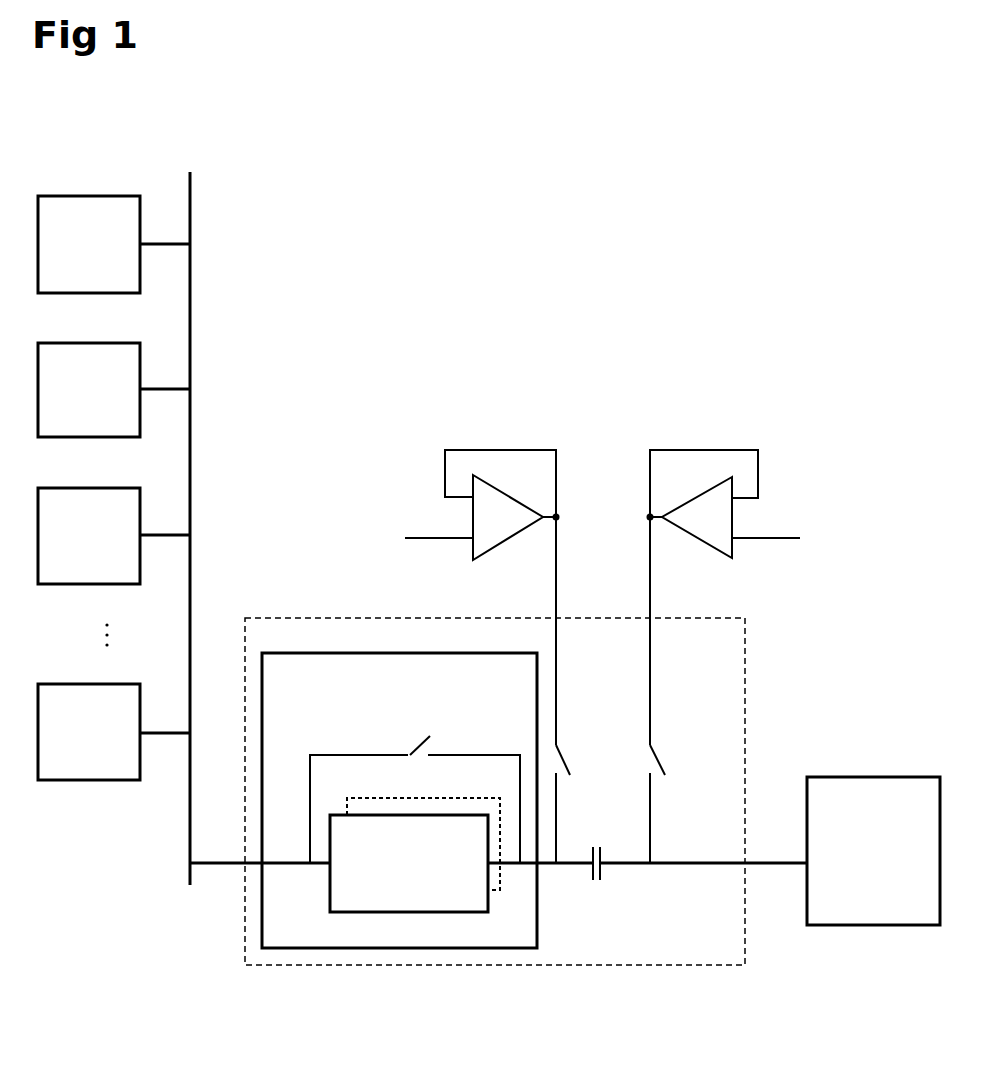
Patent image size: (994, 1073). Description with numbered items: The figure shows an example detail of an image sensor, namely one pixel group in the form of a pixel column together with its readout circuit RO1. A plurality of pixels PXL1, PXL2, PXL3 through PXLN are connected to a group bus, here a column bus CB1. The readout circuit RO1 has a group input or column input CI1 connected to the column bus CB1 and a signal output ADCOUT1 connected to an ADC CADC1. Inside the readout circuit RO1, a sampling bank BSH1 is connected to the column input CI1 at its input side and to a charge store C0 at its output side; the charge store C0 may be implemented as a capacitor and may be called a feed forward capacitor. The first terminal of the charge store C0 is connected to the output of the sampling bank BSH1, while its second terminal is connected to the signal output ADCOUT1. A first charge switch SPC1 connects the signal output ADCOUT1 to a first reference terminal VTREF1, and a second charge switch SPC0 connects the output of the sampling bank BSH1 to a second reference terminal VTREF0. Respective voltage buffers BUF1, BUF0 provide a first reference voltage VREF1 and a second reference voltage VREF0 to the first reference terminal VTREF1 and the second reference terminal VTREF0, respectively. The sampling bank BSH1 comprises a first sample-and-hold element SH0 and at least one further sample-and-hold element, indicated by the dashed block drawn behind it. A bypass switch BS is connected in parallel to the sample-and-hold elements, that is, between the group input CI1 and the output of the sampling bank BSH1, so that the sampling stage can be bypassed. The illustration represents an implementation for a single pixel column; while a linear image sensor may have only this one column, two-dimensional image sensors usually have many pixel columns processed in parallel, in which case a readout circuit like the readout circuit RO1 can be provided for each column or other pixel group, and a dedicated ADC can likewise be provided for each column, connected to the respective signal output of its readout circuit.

The column bus CB1 is at (191, 508).
The pixel PXL1 is at (114, 244).
The pixel PXL2 is at (114, 390).
The pixel PXL3 is at (114, 536).
The pixel PXLN is at (114, 732).
The column input CI1 is at (245, 864).
The readout circuit RO1 is at (495, 791).
The sampling bank BSH1 is at (399, 800).
The bypass switch BS is at (415, 781).
The first sample-and-hold element SH0 is at (414, 866).
The voltage buffer BUF0 is at (398, 466).
The voltage buffer BUF1 is at (785, 465).
The second reference voltage VREF0 is at (421, 520).
The first reference voltage VREF1 is at (782, 520).
The second reference terminal VTREF0 is at (556, 620).
The first reference terminal VTREF1 is at (650, 620).
The second charge switch SPC0 is at (594, 789).
The first charge switch SPC1 is at (692, 789).
The charge store C0 is at (586, 885).
The signal output ADCOUT1 is at (745, 863).
The ADC CADC1 is at (873, 777).